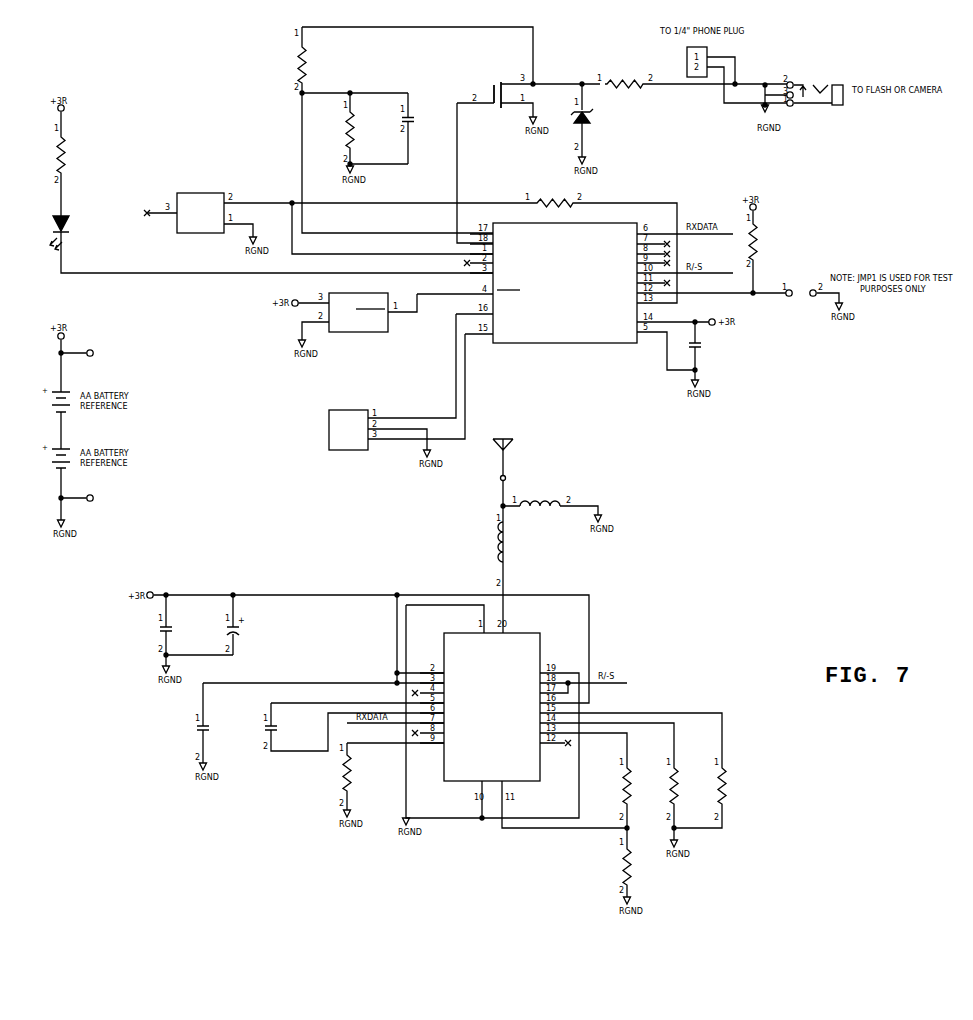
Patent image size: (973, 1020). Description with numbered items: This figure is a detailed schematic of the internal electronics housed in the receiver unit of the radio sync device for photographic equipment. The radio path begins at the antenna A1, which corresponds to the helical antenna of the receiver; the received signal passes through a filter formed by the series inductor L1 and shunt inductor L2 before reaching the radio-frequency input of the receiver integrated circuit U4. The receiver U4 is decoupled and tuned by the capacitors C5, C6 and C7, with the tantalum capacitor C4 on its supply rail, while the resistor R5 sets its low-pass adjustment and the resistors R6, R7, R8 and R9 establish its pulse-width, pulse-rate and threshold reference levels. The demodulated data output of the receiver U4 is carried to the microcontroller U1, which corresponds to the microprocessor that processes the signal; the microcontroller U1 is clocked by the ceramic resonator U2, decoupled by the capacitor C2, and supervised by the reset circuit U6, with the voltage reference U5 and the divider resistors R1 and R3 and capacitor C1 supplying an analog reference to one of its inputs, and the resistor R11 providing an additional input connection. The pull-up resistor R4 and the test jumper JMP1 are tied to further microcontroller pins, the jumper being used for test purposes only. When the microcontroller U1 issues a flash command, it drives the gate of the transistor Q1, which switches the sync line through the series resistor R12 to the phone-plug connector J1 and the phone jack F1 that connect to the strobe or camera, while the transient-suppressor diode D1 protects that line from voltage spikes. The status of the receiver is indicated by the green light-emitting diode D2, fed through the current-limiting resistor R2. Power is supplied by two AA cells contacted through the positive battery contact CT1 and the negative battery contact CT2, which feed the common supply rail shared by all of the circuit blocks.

The resistor 499K R1 is at (314, 64).
The resistor 470 ohm R2 is at (82, 155).
The resistor 499K R3 is at (362, 130).
The resistor 100K R4 is at (766, 242).
The resistor 100K R5 is at (360, 773).
The resistor 51K R6 is at (637, 786).
The resistor 330K R7 is at (687, 786).
The resistor 270K R8 is at (735, 786).
The resistor 100K R9 is at (640, 867).
The resistor 10K R11 is at (551, 191).
The resistor 51 ohm R12 is at (625, 75).
The capacitor .01uF C1 is at (423, 126).
The capacitor .1uF C2 is at (709, 353).
The tantalum capacitor 10uF C4 is at (297, 634).
The capacitor .1uF C5 is at (182, 634).
The capacitor 100pF C6 is at (222, 734).
The capacitor 1uF C7 is at (285, 734).
The transient voltage suppressor diode D1 is at (656, 118).
The green LED D2 is at (84, 228).
The MOSFET transistor Q1 is at (502, 77).
The PIC16LC710 microcontroller U1 is at (565, 289).
The 4MHz resonator U2 is at (373, 416).
The RX5000 receiver U4 is at (494, 694).
The voltage reference U5 is at (200, 218).
The reset supervisor U6 is at (364, 318).
The phone plug connector J1 is at (697, 57).
The 2.5mm phone jack F1 is at (799, 76).
The inductor 33nH L1 is at (582, 488).
The inductor 82nH L2 is at (566, 542).
The antenna A1 is at (553, 450).
The positive battery contact CT1 is at (151, 364).
The negative battery contact CT2 is at (152, 509).
The test jumper JMP1 is at (801, 285).